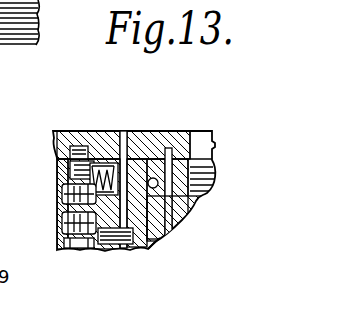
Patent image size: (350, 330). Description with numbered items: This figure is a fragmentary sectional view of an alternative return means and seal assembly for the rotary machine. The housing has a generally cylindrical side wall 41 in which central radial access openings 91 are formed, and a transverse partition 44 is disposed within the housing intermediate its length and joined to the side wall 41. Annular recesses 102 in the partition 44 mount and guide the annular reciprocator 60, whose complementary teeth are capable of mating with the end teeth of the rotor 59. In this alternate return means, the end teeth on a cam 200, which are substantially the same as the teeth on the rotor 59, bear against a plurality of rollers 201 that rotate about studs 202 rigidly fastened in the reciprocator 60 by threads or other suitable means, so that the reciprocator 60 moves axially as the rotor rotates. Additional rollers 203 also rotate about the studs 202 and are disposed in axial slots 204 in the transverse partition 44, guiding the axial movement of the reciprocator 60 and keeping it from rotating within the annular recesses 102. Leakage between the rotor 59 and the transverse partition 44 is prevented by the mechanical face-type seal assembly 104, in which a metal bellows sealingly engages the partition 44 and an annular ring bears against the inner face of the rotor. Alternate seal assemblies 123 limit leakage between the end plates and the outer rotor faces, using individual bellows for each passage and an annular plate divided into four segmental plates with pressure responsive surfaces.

The cam 200 is at (108, 140).
The rollers 201 is at (160, 138).
The studs 202 is at (124, 170).
The cylindrical side wall 41 is at (215, 145).
The central radial access openings 91 is at (213, 151).
The axial slots 204 is at (160, 187).
The rollers 203 is at (173, 212).
The transverse partition 44 is at (162, 241).
The annular recess 102 is at (149, 249).
The annular reciprocator 60 is at (100, 250).
The rotor 59 is at (76, 250).
The face seal assembly 104 is at (82, 181).
The seal assembly 123 is at (61, 223).